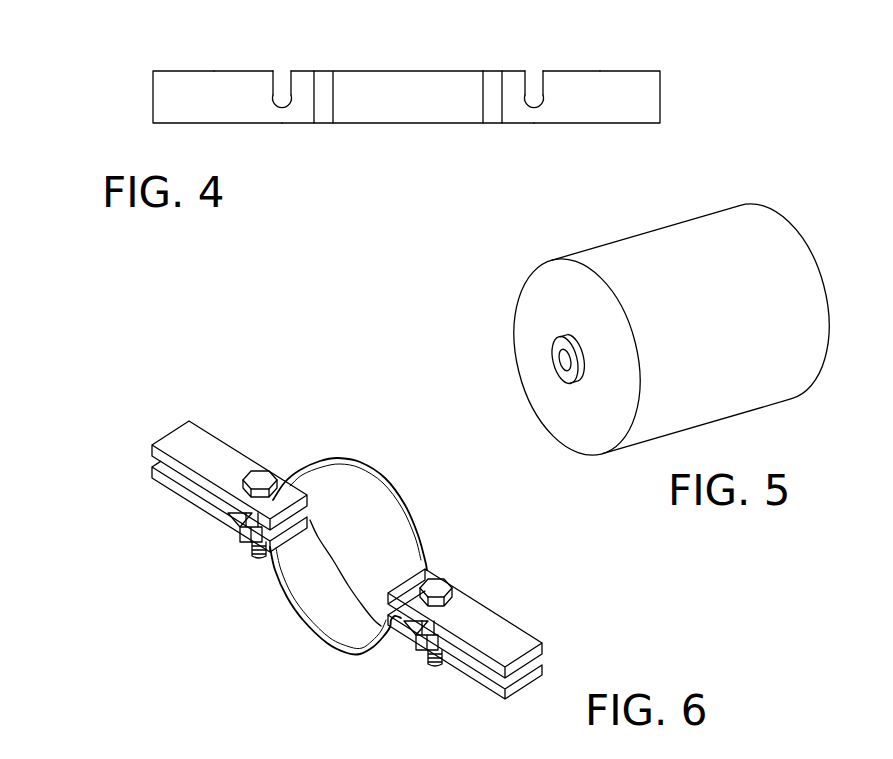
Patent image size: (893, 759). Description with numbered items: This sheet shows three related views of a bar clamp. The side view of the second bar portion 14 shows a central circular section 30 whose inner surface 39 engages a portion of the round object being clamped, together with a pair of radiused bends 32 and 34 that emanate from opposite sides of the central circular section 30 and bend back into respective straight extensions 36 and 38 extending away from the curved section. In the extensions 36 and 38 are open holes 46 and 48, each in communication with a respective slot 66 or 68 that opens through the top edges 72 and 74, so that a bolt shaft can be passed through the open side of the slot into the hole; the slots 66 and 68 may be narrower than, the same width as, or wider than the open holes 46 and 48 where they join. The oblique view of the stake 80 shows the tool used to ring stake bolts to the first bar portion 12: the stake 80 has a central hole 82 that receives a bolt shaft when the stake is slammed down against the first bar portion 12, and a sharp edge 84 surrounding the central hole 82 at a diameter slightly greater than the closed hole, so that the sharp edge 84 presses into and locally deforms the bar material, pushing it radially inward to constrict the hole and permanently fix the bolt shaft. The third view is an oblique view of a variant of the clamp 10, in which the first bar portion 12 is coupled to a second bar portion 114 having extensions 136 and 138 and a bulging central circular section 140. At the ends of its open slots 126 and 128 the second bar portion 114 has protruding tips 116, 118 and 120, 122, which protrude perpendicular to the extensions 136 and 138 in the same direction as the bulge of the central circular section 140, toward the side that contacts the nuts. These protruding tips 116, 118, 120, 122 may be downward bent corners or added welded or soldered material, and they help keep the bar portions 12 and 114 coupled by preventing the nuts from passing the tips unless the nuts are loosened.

In FIG. 4, the second bar portion 14 is at (383, 81).
In FIG. 4, the straight extension 38 is at (177, 80).
In FIG. 4, the top edge 74 is at (215, 70).
In FIG. 4, the slot 68 is at (280, 75).
In FIG. 4, the open hole 48 is at (282, 104).
In FIG. 4, the radiused bend 34 is at (323, 82).
In FIG. 4, the central circular section 30 is at (380, 57).
In FIG. 4, the inner surface 39 is at (410, 113).
In FIG. 4, the radiused bend 32 is at (493, 82).
In FIG. 4, the slot 66 is at (533, 77).
In FIG. 4, the open hole 46 is at (534, 104).
In FIG. 4, the top edge 72 is at (593, 72).
In FIG. 4, the straight extension 36 is at (638, 82).
In FIG. 5, the stake 80 is at (611, 336).
In FIG. 5, the central hole 82 is at (546, 363).
In FIG. 5, the sharp edge 84 is at (570, 384).
In FIG. 6, the clamp 10 is at (302, 559).
In FIG. 6, the first bar portion 12 is at (181, 404).
In FIG. 6, the second bar portion 114 is at (302, 604).
In FIG. 6, the extension 136 is at (168, 487).
In FIG. 6, the extension 138 is at (485, 684).
In FIG. 6, the central circular section 140 is at (305, 627).
In FIG. 6, the protruding tip 116 is at (232, 522).
In FIG. 6, the open slot 126 is at (236, 548).
In FIG. 6, the protruding tip 118 is at (261, 550).
In FIG. 6, the protruding tip 120 is at (405, 637).
In FIG. 6, the open slot 128 is at (409, 655).
In FIG. 6, the protruding tip 122 is at (426, 651).